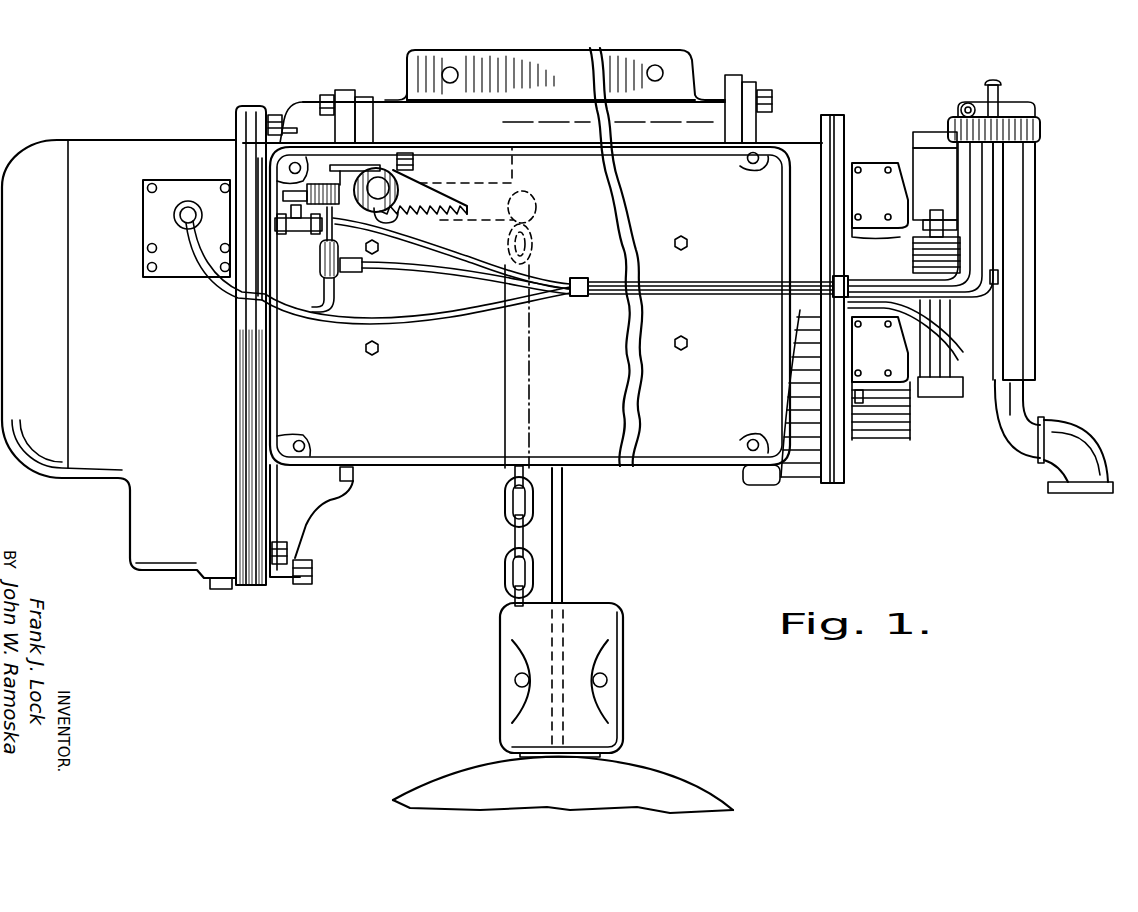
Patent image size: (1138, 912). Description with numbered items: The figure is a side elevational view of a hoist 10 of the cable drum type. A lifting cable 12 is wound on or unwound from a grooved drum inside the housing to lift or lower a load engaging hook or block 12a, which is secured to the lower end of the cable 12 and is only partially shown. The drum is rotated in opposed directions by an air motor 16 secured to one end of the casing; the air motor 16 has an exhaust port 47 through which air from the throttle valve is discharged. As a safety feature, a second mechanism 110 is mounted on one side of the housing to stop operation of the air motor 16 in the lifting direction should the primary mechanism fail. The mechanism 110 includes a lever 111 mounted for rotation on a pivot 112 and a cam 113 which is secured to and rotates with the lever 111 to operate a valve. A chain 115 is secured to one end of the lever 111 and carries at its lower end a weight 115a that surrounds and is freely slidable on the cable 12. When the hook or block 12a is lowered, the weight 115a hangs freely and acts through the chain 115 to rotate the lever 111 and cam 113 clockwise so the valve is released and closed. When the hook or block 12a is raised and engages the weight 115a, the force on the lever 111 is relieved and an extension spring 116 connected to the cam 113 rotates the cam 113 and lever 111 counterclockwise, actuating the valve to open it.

The hoist 10 is at (822, 95).
The lifting cable 12 is at (562, 548).
The load engaging hook or block 12a is at (453, 780).
The air motor 16 is at (892, 152).
The exhaust port 47 is at (1020, 390).
The second mechanism 110 is at (442, 176).
The lever 111 is at (507, 143).
The pivot 112 is at (403, 160).
The cam 113 is at (378, 185).
The chain 115 is at (502, 506).
The weight 115a is at (622, 667).
The extension spring 116 is at (422, 208).